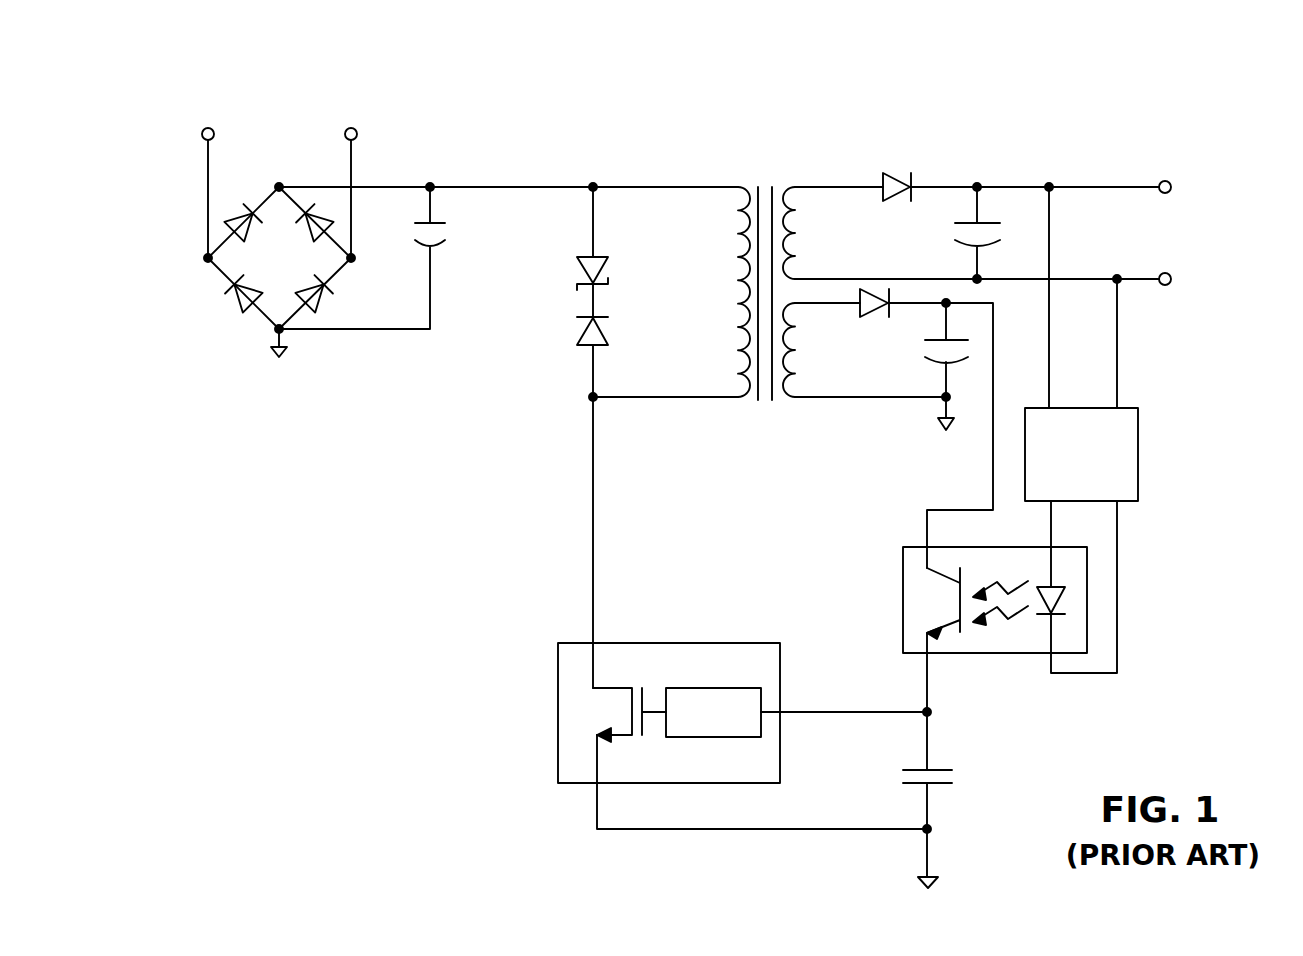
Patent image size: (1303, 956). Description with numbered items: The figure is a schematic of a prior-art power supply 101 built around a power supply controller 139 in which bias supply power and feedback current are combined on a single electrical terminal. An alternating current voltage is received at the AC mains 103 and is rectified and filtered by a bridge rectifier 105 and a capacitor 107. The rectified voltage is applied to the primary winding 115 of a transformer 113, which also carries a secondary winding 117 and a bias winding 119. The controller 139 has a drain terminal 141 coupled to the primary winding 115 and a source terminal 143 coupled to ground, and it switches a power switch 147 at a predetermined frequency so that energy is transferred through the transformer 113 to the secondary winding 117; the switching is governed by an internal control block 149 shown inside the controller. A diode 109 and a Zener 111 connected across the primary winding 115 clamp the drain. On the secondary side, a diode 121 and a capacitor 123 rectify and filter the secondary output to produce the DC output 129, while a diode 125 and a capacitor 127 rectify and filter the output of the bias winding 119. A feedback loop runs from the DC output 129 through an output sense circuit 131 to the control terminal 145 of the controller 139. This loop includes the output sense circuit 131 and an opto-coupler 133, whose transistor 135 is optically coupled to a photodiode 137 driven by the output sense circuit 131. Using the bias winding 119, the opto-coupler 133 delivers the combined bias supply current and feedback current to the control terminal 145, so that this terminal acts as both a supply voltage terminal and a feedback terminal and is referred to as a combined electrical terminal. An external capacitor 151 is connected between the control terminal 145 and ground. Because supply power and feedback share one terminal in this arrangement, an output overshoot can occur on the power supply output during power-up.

The power supply 101 is at (1166, 108).
The AC mains 103 is at (262, 88).
The bridge rectifier 105 is at (238, 333).
The capacitor 107 is at (460, 238).
The diode 109 is at (608, 268).
The Zener 111 is at (612, 331).
The transformer 113 is at (764, 278).
The primary winding 115 is at (734, 402).
The secondary winding 117 is at (800, 170).
The bias winding 119 is at (800, 405).
The diode 121 is at (890, 168).
The capacitor 123 is at (948, 235).
The diode 125 is at (862, 320).
The capacitor 127 is at (920, 350).
The DC output 129 is at (1165, 235).
The output sense circuit 131 is at (1140, 430).
The opto-coupler 133 is at (971, 607).
The transistor 135 is at (912, 620).
The photodiode 137 is at (1050, 622).
The power supply controller 139 is at (705, 613).
The drain terminal 141 is at (595, 600).
The source terminal 143 is at (595, 815).
The control terminal 145 is at (795, 725).
The power switch 147 is at (585, 710).
The control circuit 149 is at (765, 690).
The external capacitor 151 is at (955, 777).